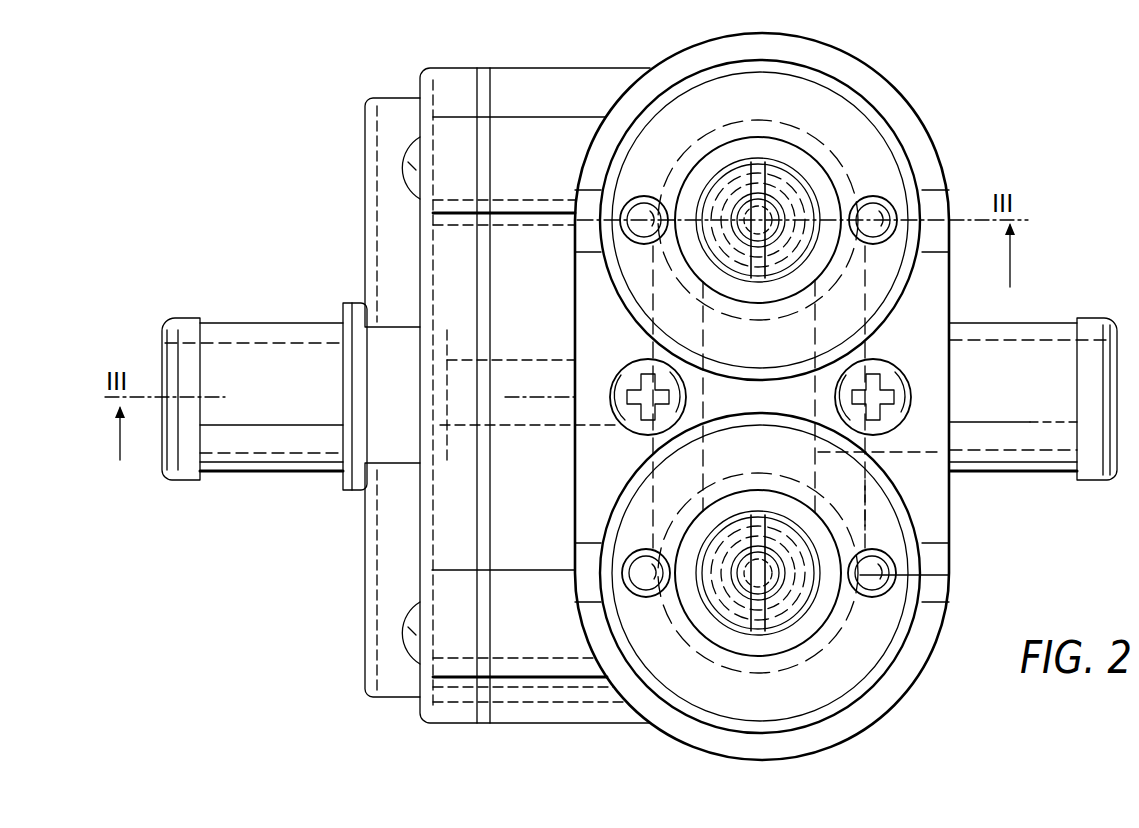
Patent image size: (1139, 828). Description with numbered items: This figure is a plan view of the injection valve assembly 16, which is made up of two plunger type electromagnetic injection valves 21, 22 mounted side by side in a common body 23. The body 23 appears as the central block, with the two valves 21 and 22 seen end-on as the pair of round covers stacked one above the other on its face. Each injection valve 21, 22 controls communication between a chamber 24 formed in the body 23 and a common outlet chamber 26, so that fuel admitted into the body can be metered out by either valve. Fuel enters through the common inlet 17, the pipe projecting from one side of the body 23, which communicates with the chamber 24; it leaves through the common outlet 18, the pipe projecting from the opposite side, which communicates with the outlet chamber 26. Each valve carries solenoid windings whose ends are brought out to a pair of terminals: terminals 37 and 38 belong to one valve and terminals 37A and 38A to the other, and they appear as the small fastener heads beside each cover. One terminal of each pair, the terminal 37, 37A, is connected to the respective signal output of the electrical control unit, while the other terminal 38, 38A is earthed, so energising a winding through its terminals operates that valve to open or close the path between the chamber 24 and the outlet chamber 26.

The injection valve assembly 16 is at (355, 126).
The common inlet 17 is at (251, 360).
The common outlet 18 is at (1017, 433).
The electromagnetic injection valve 21 is at (865, 145).
The electromagnetic injection valve 22 is at (848, 668).
The common body 23 is at (520, 523).
The chamber 24 is at (865, 525).
The common outlet chamber 26 is at (818, 487).
The terminal 37 is at (871, 205).
The terminal 38 is at (643, 205).
The terminal 37A is at (878, 576).
The terminal 38A is at (640, 575).